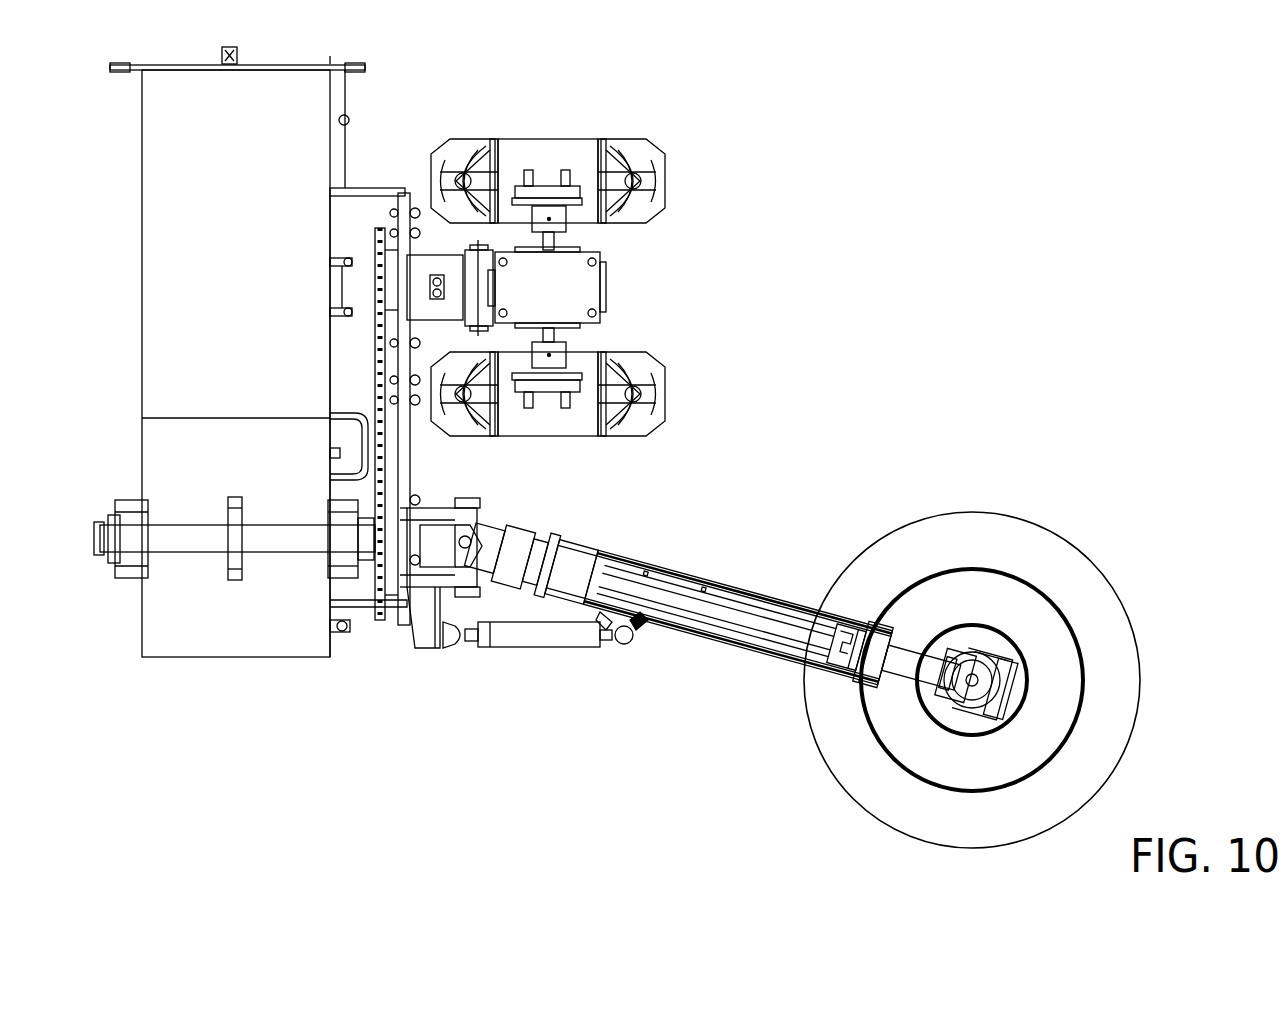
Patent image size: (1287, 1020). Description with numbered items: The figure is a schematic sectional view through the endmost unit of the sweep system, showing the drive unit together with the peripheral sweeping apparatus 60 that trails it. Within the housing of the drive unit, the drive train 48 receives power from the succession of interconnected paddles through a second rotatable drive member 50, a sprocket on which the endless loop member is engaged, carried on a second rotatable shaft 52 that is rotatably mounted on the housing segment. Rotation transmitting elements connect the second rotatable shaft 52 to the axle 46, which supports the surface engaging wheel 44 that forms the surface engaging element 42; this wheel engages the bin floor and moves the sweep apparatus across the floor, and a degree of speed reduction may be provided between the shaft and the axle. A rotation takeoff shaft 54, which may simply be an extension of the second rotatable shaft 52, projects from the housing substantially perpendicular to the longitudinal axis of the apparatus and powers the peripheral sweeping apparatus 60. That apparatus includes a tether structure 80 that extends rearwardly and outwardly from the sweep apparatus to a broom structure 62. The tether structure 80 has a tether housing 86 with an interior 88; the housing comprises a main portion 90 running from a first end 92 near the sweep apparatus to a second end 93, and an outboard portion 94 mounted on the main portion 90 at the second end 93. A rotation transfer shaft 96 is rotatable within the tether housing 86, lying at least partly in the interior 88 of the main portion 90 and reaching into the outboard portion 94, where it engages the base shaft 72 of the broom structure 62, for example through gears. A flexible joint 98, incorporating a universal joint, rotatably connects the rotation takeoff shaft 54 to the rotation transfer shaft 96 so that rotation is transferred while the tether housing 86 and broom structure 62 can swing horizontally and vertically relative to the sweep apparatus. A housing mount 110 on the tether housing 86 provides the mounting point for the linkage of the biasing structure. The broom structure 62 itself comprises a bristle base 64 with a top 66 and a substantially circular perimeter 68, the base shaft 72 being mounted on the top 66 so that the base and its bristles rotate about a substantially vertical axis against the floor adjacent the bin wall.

The surface engaging element 42 is at (680, 138).
The surface engaging wheel 44 is at (668, 174).
The axle 46 is at (565, 238).
The drive train 48 is at (362, 228).
The second rotatable drive member 50 is at (230, 513).
The second rotatable shaft 52 is at (188, 545).
The rotation takeoff shaft 54 is at (412, 545).
The peripheral sweeping apparatus 60 is at (836, 414).
The broom structure 62 is at (1030, 488).
The bristle base 64 is at (995, 598).
The top 66 is at (1033, 608).
The perimeter 68 is at (1090, 672).
The base shaft 72 is at (985, 675).
The tether structure 80 is at (662, 532).
The tether housing 86 is at (698, 574).
The interior 88 is at (578, 544).
The main portion 90 is at (798, 600).
The first end 92 is at (558, 549).
The second end 93 is at (980, 710).
The outboard portion 94 is at (960, 705).
The rotation transfer shaft 96 is at (727, 616).
The flexible joint 98 is at (472, 582).
The housing mount 110 is at (638, 625).